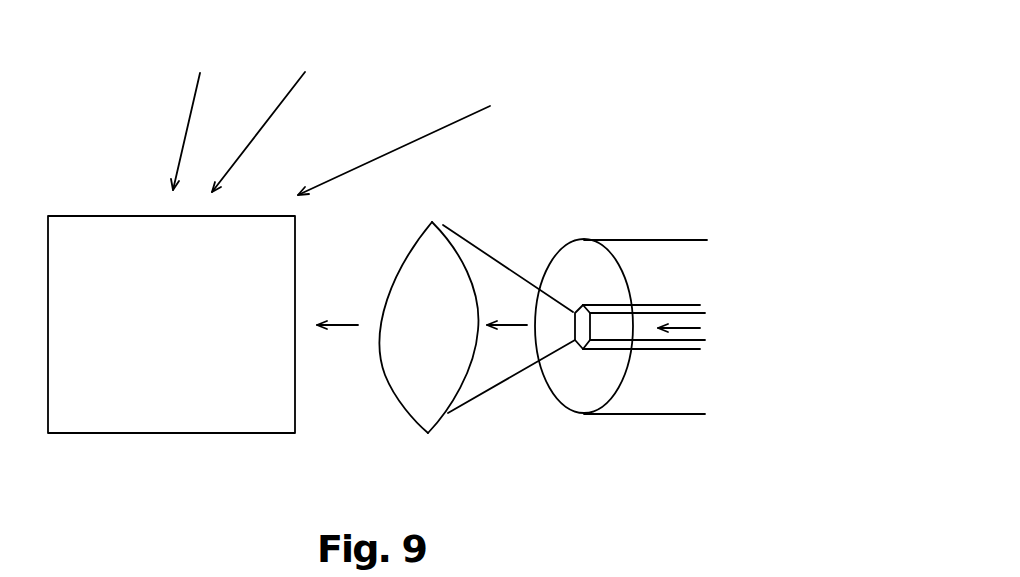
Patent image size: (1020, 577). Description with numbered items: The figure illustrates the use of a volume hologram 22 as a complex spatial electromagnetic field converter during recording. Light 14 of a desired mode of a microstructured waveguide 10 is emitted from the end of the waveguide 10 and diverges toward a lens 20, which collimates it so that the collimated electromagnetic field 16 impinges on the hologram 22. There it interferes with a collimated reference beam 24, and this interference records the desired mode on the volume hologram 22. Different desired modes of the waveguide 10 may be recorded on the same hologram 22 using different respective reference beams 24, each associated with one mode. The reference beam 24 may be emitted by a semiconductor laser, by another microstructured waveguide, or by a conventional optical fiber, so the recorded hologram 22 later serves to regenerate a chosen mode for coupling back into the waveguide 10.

The microstructured waveguide 10 is at (668, 257).
The light 14 is at (492, 377).
The collimated electromagnetic field 16 is at (339, 340).
The lens 20 is at (433, 222).
The volume hologram 22 is at (174, 415).
The collimated reference beam 24 is at (355, 118).